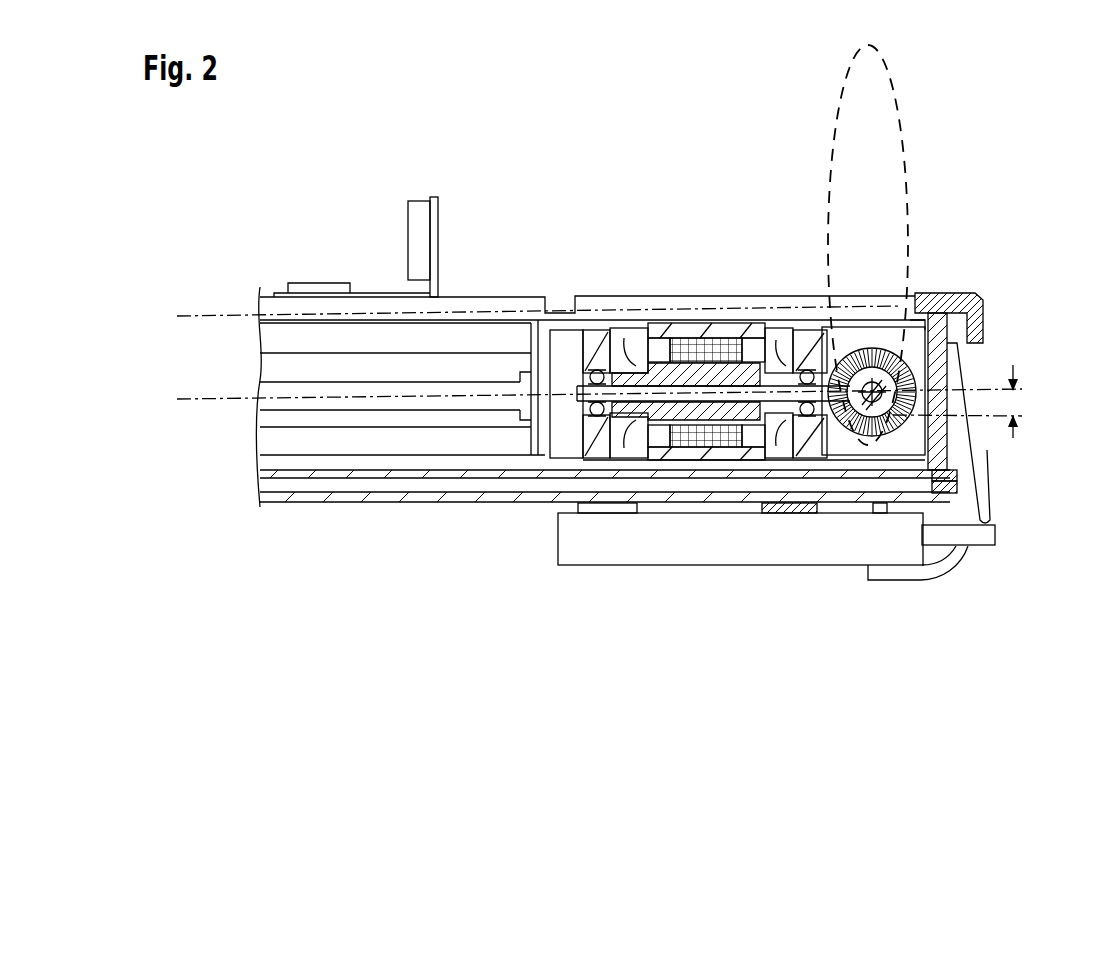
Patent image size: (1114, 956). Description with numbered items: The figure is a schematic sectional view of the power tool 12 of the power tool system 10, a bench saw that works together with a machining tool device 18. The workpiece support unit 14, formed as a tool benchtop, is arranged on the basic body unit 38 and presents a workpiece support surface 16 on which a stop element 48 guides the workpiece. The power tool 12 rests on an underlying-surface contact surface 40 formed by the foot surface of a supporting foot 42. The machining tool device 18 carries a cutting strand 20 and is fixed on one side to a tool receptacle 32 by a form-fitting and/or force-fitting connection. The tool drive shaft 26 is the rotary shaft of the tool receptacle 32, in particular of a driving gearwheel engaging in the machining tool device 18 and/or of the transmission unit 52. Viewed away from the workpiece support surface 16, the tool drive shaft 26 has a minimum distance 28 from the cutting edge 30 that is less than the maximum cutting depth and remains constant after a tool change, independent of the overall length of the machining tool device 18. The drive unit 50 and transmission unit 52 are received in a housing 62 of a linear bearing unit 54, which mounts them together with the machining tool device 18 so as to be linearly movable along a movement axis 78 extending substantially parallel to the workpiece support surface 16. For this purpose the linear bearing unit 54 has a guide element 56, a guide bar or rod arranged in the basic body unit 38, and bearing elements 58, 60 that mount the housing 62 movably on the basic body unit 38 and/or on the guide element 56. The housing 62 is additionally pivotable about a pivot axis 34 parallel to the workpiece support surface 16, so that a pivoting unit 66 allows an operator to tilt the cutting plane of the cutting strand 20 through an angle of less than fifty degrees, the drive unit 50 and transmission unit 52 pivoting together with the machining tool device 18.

The power tool system 10 is at (256, 211).
The power tool 12 is at (208, 555).
The workpiece support unit 14 is at (1003, 295).
The workpiece support surface 16 is at (953, 300).
The machining tool device 18 is at (795, 116).
The cutting strand 20 is at (906, 152).
The tool drive shaft 26 is at (847, 435).
The minimum distance 28 is at (1015, 402).
The cutting edge 30 is at (930, 430).
The tool receptacle 32 is at (850, 330).
The pivot axis 34 is at (190, 314).
The basic body unit 38 is at (290, 522).
The underlying-surface contact surface 40 is at (910, 583).
The supporting foot 42 is at (972, 553).
The stop element 48 is at (412, 228).
The drive unit 50 is at (658, 304).
The transmission unit 52 is at (797, 355).
The linear bearing unit 54 is at (236, 350).
The guide element 56 is at (338, 480).
The bearing element 58 is at (573, 467).
The bearing element 60 is at (753, 470).
The housing 62 is at (702, 328).
The pivoting unit 66 is at (586, 575).
The movement axis 78 is at (215, 402).